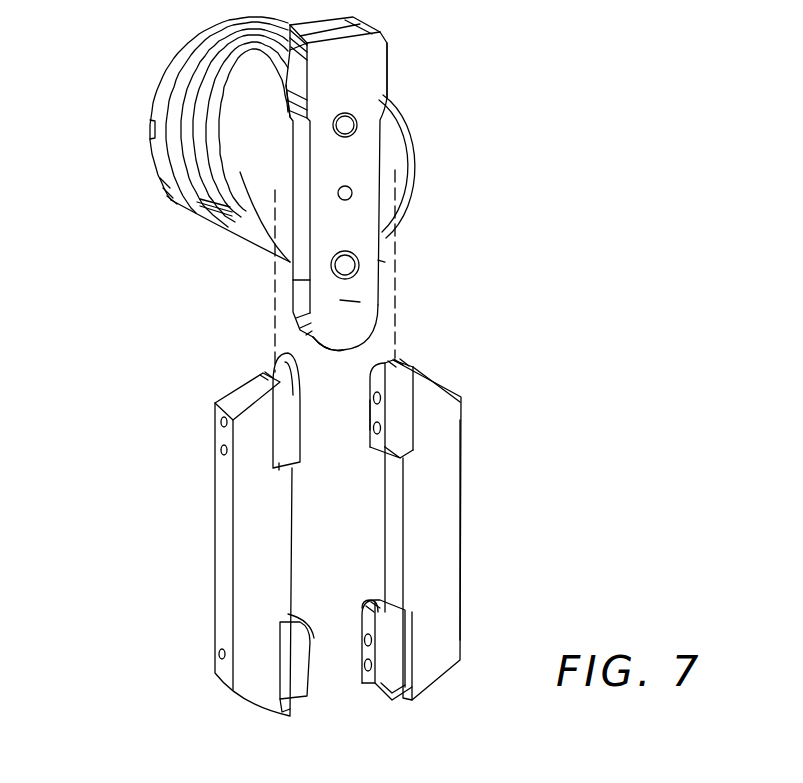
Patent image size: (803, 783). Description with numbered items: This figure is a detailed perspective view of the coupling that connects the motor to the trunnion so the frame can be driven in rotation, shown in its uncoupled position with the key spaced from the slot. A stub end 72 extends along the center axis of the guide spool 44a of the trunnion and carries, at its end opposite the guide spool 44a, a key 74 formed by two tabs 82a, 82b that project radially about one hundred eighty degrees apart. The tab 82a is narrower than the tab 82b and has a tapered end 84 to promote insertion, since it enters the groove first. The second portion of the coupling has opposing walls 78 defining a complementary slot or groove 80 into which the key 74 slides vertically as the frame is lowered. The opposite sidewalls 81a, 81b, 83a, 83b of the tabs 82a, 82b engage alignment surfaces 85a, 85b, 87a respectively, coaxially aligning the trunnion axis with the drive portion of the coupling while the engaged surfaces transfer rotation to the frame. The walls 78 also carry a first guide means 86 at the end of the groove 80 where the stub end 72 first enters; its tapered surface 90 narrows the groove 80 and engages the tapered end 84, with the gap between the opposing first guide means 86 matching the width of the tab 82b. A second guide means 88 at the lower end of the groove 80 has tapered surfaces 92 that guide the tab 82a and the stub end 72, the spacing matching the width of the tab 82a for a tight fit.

The guide spool 44a is at (230, 204).
The stub end 72 is at (392, 146).
The key 74 is at (368, 47).
The opposing walls 78 is at (448, 487).
The slot or groove 80 is at (397, 534).
The sidewall of tab 81a is at (290, 67).
The sidewall of tab 81b is at (390, 63).
The tab 82a is at (353, 303).
The tab 82b is at (310, 78).
The sidewall of tab 83a is at (303, 281).
The sidewall of tab 83b is at (377, 268).
The tapered end 84 is at (348, 336).
The alignment surface 85a is at (300, 427).
The alignment surface 85b is at (369, 410).
The first guide means 86 is at (407, 428).
The alignment surface 87a is at (311, 668).
The second guide means 88 is at (395, 630).
The tapered surface 90 is at (273, 355).
The tapered surfaces 92 is at (292, 612).